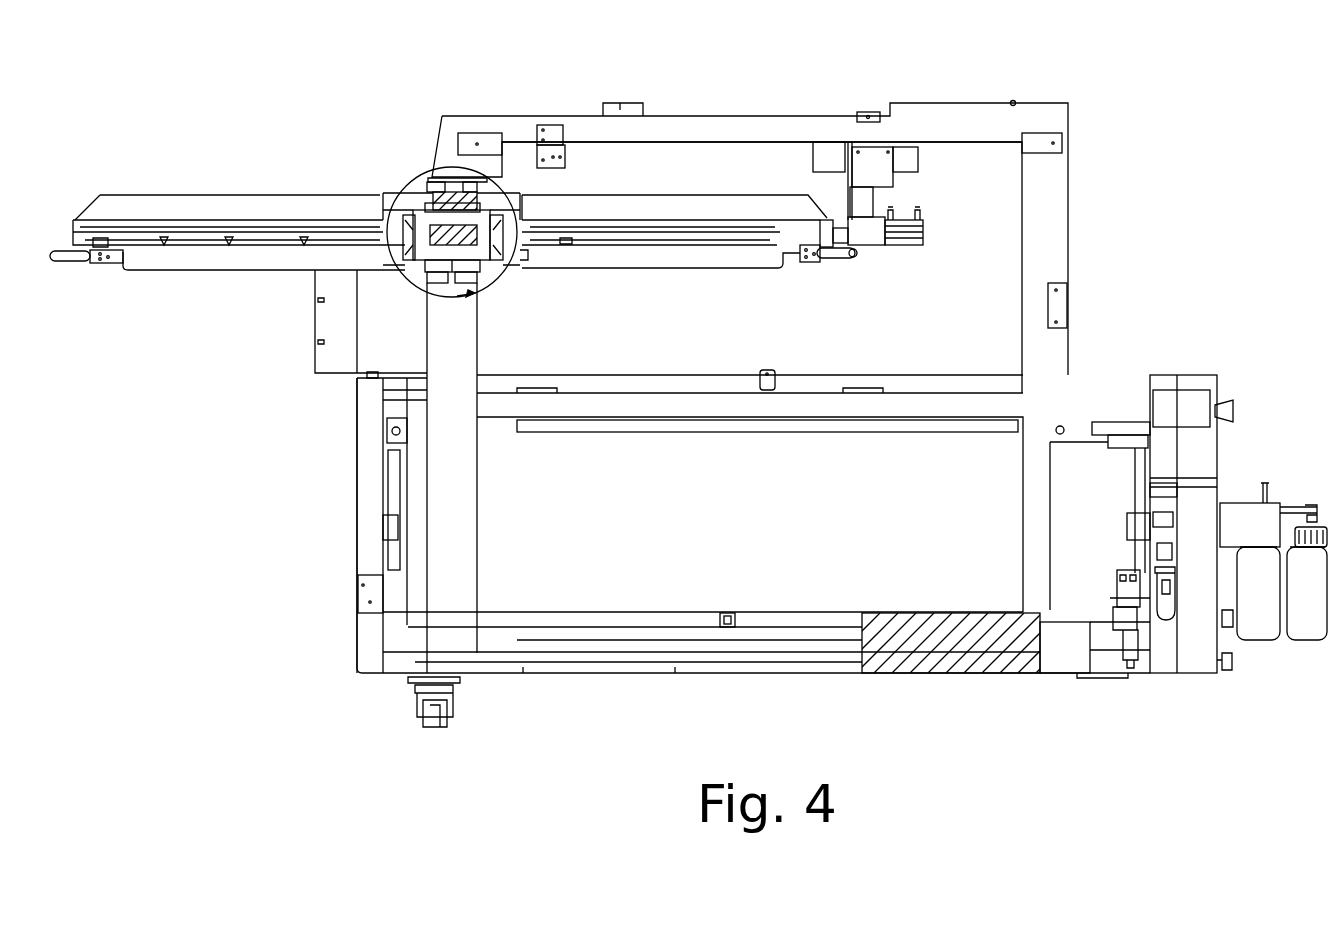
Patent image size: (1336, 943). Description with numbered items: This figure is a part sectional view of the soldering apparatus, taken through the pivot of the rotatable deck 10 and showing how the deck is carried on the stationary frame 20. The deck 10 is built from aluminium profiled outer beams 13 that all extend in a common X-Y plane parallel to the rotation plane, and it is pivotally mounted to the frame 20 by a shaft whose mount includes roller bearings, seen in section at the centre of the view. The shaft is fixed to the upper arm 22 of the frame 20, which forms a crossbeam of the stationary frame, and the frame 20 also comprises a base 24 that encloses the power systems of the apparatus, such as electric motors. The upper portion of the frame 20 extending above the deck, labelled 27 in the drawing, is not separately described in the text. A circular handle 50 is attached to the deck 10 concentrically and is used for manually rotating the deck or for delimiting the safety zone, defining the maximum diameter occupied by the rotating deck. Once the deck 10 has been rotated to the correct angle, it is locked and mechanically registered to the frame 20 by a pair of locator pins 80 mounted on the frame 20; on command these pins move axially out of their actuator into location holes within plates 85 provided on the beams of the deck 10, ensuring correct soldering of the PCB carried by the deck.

The rotatable deck 10 is at (137, 286).
The outer beams 13 is at (660, 230).
The frame 20 is at (780, 110).
The upper arm 22 is at (431, 184).
The base 24 is at (357, 603).
The beam of gantry arm 27 is at (695, 127).
The circular handle 50 is at (856, 258).
The locator pins 80 is at (843, 238).
The plates 85 is at (827, 220).